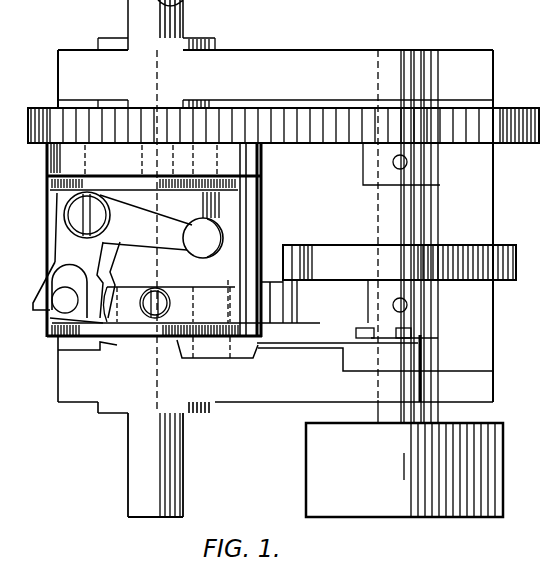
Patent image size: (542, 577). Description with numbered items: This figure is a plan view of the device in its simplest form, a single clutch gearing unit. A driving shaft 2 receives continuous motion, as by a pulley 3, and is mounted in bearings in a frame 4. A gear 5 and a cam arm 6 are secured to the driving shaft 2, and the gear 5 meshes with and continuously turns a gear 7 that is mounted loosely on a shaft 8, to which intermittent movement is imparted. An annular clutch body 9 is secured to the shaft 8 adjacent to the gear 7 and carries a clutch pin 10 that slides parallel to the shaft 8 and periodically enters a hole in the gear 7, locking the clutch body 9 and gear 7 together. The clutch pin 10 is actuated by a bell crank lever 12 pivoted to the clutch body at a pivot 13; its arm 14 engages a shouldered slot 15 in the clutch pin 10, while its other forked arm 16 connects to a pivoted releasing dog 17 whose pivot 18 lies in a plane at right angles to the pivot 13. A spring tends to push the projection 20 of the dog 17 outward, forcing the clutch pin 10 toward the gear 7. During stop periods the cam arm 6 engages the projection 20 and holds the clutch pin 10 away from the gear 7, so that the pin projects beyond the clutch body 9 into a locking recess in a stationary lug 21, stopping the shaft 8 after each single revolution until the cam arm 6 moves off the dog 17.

The driving shaft 2 is at (157, 553).
The pulley 3 is at (484, 475).
The frame 4 is at (418, 371).
The gear 5 is at (504, 115).
The cam arm 6 is at (293, 288).
The gear 7 is at (145, 125).
The shaft 8 is at (138, 450).
The annular clutch body 9 is at (291, 225).
The clutch pin 10 is at (154, 240).
The bell crank lever 12 is at (119, 217).
The pivot 13 is at (83, 215).
The arm 14 is at (197, 237).
The shouldered slot 15 is at (265, 185).
The forked arm 16 is at (45, 292).
The releasing dog 17 is at (395, 363).
The pivot 18 is at (449, 314).
The projection 20 is at (270, 313).
The stationary lug 21 is at (187, 353).